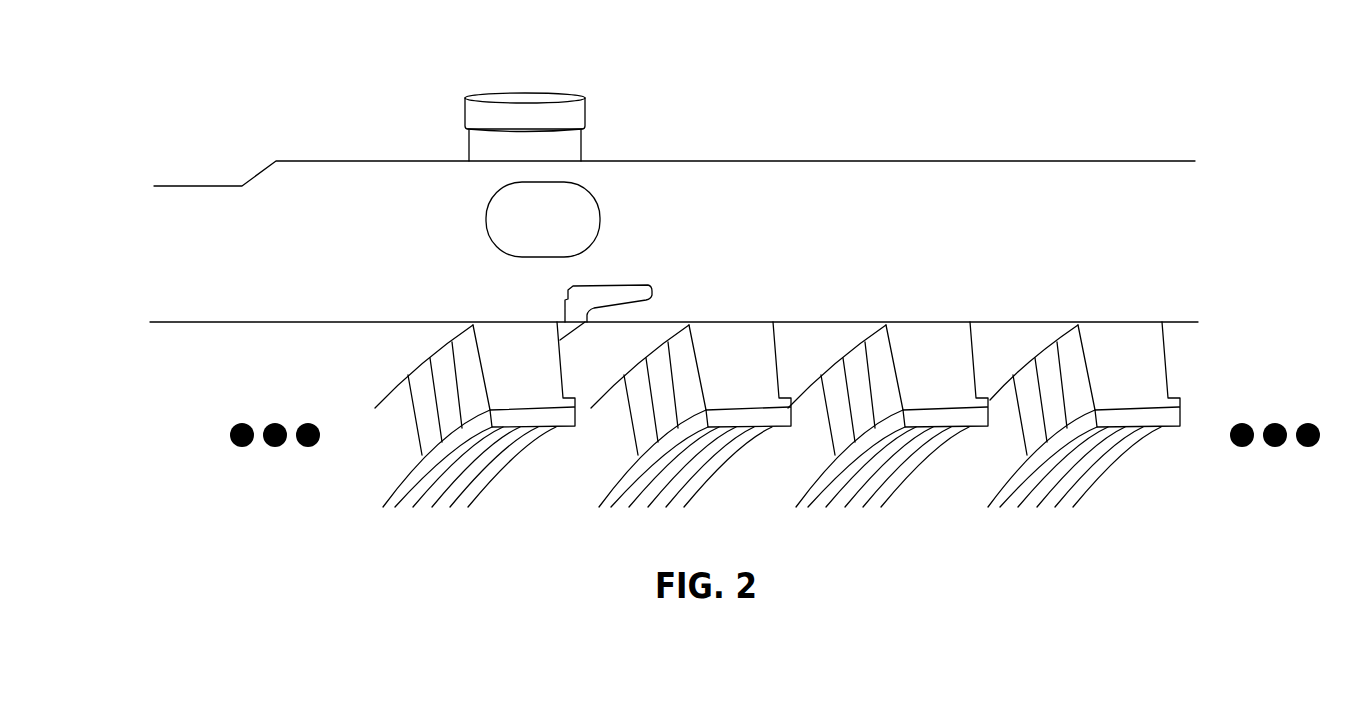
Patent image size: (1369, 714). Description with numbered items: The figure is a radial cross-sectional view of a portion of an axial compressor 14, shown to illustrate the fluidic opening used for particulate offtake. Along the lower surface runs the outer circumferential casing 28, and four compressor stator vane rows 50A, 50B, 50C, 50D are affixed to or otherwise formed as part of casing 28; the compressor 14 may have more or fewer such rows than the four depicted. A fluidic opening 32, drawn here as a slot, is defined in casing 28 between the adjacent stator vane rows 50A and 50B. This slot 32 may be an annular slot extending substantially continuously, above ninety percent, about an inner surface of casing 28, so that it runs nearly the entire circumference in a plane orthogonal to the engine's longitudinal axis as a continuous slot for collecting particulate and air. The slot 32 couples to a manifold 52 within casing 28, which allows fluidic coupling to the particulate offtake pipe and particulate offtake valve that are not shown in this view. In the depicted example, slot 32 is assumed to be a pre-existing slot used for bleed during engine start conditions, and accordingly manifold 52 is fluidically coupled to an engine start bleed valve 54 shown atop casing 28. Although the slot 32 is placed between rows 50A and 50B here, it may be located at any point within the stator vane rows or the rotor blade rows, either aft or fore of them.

The compressor 14 is at (1145, 117).
The casing 28 is at (823, 173).
The fluidic opening 32 is at (638, 285).
The compressor stator vane row 50A is at (525, 332).
The compressor stator vane row 50B is at (712, 332).
The compressor stator vane row 50C is at (918, 332).
The compressor stator vane row 50D is at (1105, 333).
The manifold 52 is at (590, 215).
The engine start bleed valve 54 is at (586, 104).